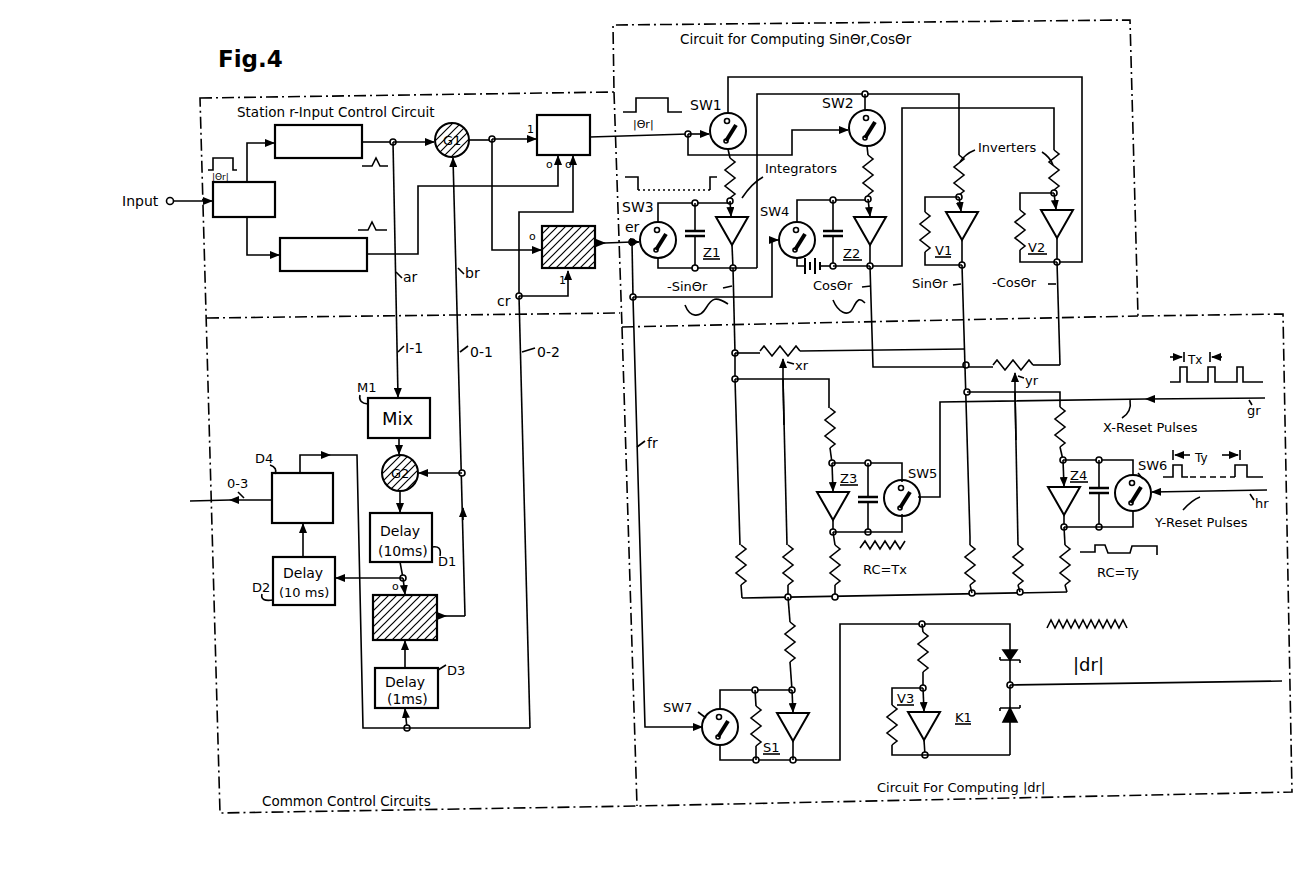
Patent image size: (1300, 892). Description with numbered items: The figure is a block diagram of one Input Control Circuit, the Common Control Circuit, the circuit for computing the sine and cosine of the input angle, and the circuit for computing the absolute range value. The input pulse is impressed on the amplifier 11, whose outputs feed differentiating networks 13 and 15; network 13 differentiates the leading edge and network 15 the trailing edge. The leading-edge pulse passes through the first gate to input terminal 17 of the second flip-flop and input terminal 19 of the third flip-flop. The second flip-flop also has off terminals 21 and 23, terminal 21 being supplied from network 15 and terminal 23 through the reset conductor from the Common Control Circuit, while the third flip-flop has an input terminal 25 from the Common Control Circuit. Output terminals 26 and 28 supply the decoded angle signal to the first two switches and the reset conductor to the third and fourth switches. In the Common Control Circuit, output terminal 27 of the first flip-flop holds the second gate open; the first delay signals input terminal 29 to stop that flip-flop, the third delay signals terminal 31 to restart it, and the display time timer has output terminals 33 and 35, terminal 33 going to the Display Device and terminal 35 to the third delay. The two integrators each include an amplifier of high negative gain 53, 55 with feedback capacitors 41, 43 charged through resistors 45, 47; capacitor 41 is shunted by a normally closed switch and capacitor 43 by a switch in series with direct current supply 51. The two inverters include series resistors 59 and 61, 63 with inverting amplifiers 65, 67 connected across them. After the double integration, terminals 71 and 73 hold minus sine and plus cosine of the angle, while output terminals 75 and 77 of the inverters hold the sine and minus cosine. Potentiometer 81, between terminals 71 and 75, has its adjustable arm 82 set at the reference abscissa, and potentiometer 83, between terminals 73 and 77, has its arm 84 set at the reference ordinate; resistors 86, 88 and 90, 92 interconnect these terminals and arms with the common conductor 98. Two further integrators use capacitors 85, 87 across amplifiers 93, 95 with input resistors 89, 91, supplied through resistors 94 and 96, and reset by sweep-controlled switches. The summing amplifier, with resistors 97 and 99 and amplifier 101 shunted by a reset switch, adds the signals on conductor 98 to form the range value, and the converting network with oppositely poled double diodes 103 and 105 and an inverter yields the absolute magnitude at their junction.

The amplifier 11 is at (232, 216).
The differentiating network 13 is at (312, 157).
The differentiating network 15 is at (302, 272).
The input terminal 17 is at (518, 138).
The input terminal 19 is at (510, 248).
The off terminal 21 is at (545, 188).
The off terminal 23 is at (575, 192).
The input terminal 25 is at (570, 282).
The output terminal 26 is at (604, 136).
The output terminal 27 is at (465, 621).
The output terminal 28 is at (606, 240).
The input terminal 29 is at (405, 581).
The terminal 31 is at (410, 650).
The output terminal 33 is at (264, 503).
The output terminal 35 is at (298, 458).
The feedback capacitor 41 is at (690, 228).
The feedback capacitor 43 is at (831, 226).
The resistor 45 is at (733, 183).
The resistor 47 is at (872, 174).
The direct current supply 51 is at (807, 274).
The amplifier of high negative gain 53 is at (733, 203).
The amplifier of high negative gain 55 is at (873, 202).
The resistor 59 is at (926, 221).
The resistor 61 is at (1057, 168).
The resistor 63 is at (1019, 221).
The inverting amplifier 65 is at (961, 213).
The inverting amplifier 67 is at (1059, 214).
The terminal 71 is at (731, 327).
The terminal 73 is at (874, 333).
The output terminal 75 is at (965, 331).
The output terminal 77 is at (1058, 331).
The potentiometer 81 is at (804, 340).
The adjustable arm 82 is at (782, 407).
The potentiometer 83 is at (1020, 364).
The adjustable arm 84 is at (1013, 428).
The capacitor 85 is at (872, 495).
The resistor 86 is at (785, 553).
The capacitor 87 is at (1102, 487).
The resistor 88 is at (737, 553).
The resistor 89 is at (827, 426).
The resistor 90 is at (1013, 543).
The resistor 91 is at (1066, 427).
The resistor 92 is at (965, 552).
The amplifier 93 is at (822, 494).
The resistor 94 is at (830, 558).
The amplifier 95 is at (1052, 490).
The resistor 96 is at (1061, 552).
The resistor 97 is at (787, 643).
The common conductor 98 is at (893, 597).
The resistor 99 is at (753, 716).
The amplifier 101 is at (797, 717).
The double diode 103 is at (1003, 657).
The double diode 105 is at (1018, 713).